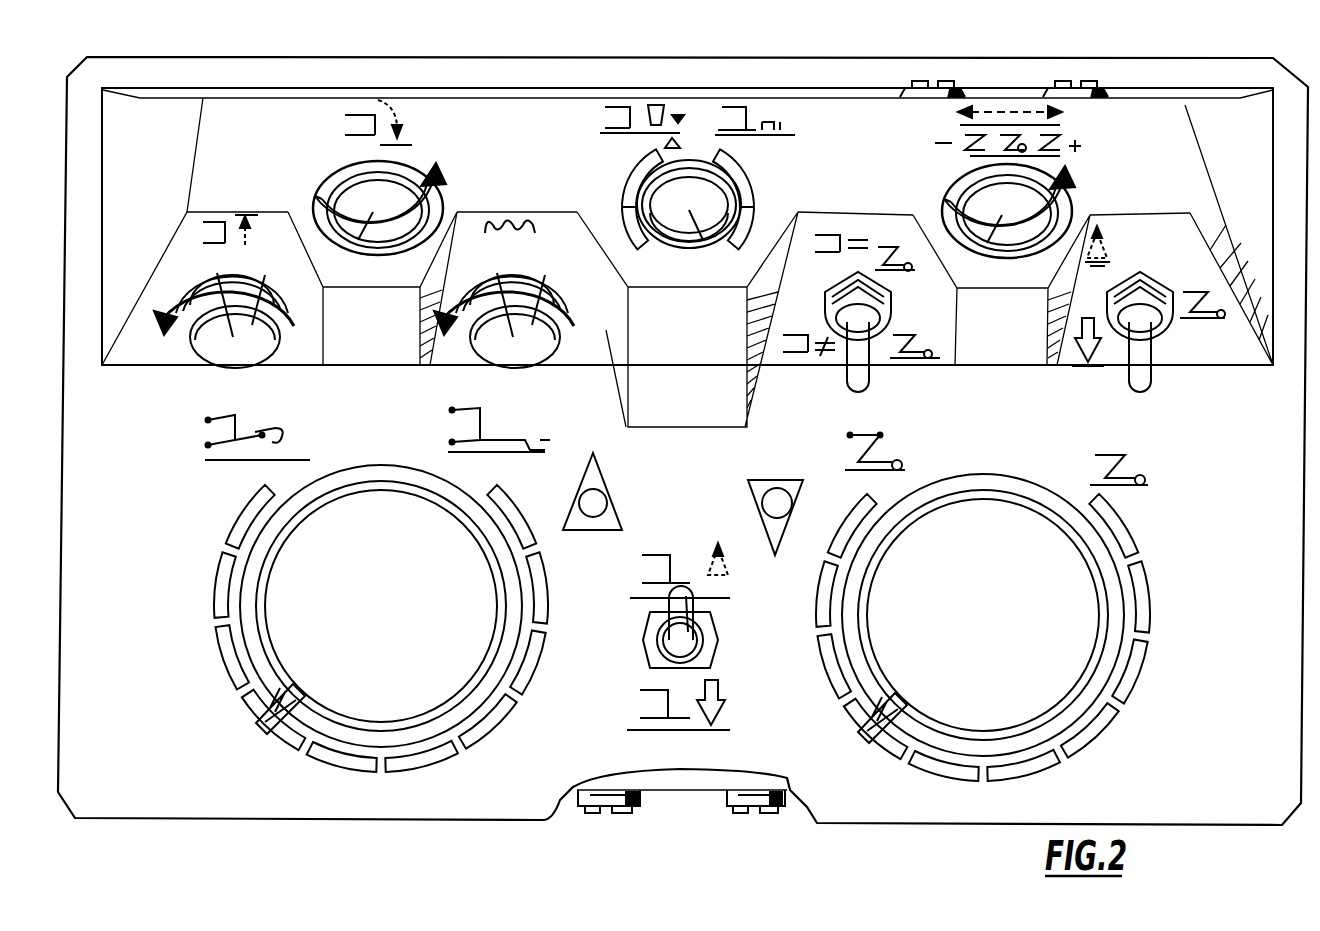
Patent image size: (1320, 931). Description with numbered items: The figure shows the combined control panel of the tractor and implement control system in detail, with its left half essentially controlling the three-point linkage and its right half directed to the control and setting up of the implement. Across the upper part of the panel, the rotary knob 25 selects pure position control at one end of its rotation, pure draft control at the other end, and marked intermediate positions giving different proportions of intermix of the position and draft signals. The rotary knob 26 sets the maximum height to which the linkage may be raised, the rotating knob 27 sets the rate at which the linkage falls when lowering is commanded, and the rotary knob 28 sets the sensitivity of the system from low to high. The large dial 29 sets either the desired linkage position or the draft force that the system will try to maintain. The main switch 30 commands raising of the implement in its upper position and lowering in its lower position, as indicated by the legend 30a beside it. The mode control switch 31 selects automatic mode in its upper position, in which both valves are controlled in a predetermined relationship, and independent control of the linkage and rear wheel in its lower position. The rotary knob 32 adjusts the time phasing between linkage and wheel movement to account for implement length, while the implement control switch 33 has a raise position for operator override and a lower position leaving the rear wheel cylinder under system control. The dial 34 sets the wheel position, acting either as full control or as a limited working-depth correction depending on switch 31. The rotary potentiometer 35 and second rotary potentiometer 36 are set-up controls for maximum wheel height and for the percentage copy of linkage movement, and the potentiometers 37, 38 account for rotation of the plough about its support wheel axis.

The rotary knob 25 is at (688, 193).
The rotary knob 26 is at (253, 323).
The rotating knob 27 is at (357, 198).
The rotary knob 28 is at (537, 287).
The dial 29 is at (358, 698).
The main switch 30 is at (653, 650).
The legend 30a is at (760, 510).
The mode control switch 31 is at (858, 313).
The rotary knob 32 is at (972, 208).
The implement control switch 33 is at (1135, 317).
The dial 34 is at (963, 708).
The rotary potentiometer 35 is at (955, 92).
The rotary potentiometer 36 is at (1062, 92).
The potentiometer 37 is at (587, 805).
The potentiometer 38 is at (730, 805).